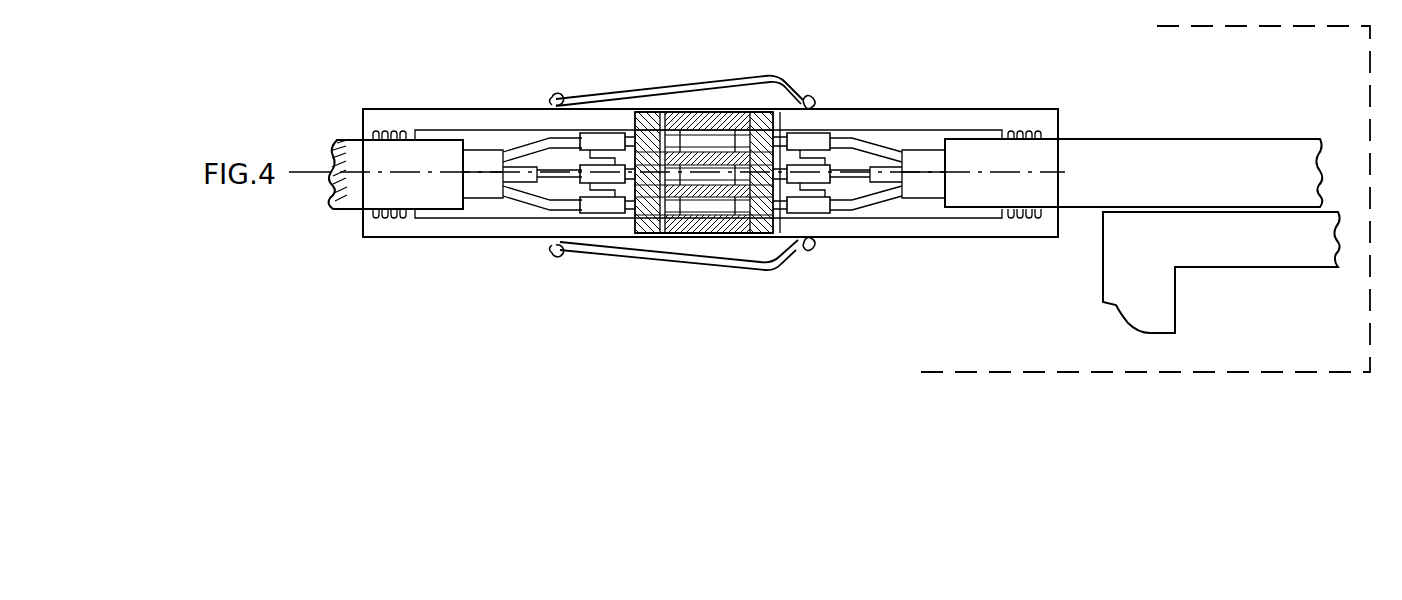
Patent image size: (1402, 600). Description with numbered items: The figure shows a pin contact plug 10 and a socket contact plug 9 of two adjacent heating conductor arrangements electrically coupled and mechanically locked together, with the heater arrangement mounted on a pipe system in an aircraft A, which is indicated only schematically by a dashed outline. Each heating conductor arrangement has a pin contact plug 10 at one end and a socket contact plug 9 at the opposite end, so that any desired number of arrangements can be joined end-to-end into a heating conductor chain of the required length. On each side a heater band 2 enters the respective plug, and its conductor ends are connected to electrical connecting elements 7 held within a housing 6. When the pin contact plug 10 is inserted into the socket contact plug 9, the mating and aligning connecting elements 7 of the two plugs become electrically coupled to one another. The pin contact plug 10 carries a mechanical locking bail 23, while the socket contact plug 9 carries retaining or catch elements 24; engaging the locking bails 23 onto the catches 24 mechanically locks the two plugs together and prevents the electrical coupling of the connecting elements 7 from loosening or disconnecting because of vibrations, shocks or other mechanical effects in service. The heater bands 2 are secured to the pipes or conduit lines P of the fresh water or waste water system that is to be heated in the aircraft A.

The pin contact plug 10 is at (710, 151).
The heater band 2 is at (353, 141).
The housing 6 is at (436, 234).
The electrical connecting element 7 is at (641, 110).
The mechanical locking bail 23 is at (658, 92).
The retaining catch element 24 is at (798, 107).
The socket contact plug 9 is at (753, 144).
The pipe P is at (1226, 248).
The aircraft A is at (1238, 374).